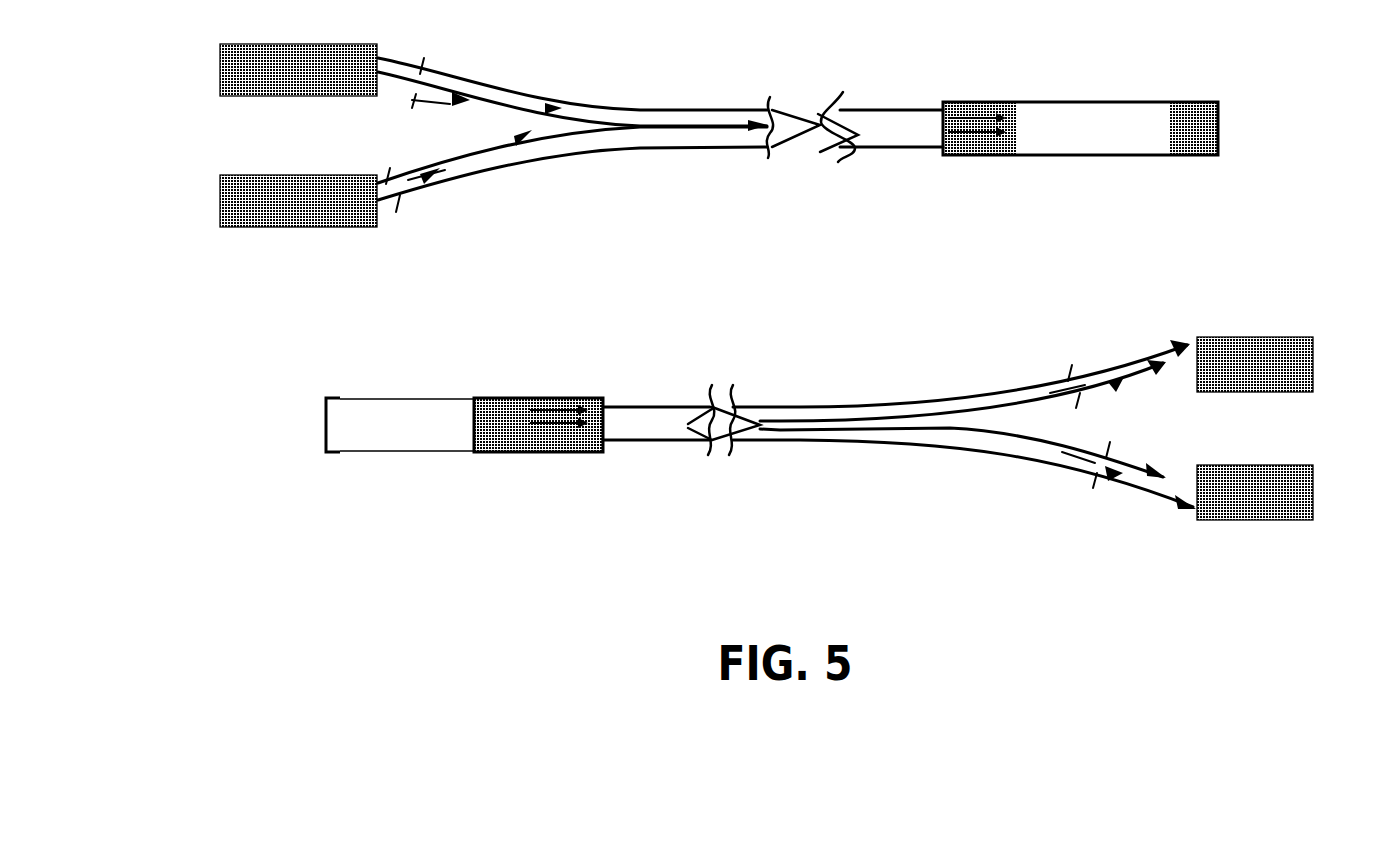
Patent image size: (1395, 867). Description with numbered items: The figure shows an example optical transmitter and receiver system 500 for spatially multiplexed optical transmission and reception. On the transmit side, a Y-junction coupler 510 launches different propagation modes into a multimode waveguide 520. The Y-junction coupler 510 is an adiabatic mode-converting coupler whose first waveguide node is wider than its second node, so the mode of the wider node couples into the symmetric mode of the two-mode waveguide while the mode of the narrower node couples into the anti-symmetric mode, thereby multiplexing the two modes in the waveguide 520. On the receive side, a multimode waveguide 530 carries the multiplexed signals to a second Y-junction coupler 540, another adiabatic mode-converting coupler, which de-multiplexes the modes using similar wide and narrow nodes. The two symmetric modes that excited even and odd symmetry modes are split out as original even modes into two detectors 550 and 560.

The optical transmitter and receiver system 500 is at (797, 277).
The Y-junction coupler 510 is at (875, 147).
The multimode waveguide 520 is at (1122, 102).
The multimode waveguide 530 is at (510, 398).
The Y-junction coupler 540 is at (623, 440).
The detector 550 is at (1255, 465).
The detector 560 is at (1262, 337).